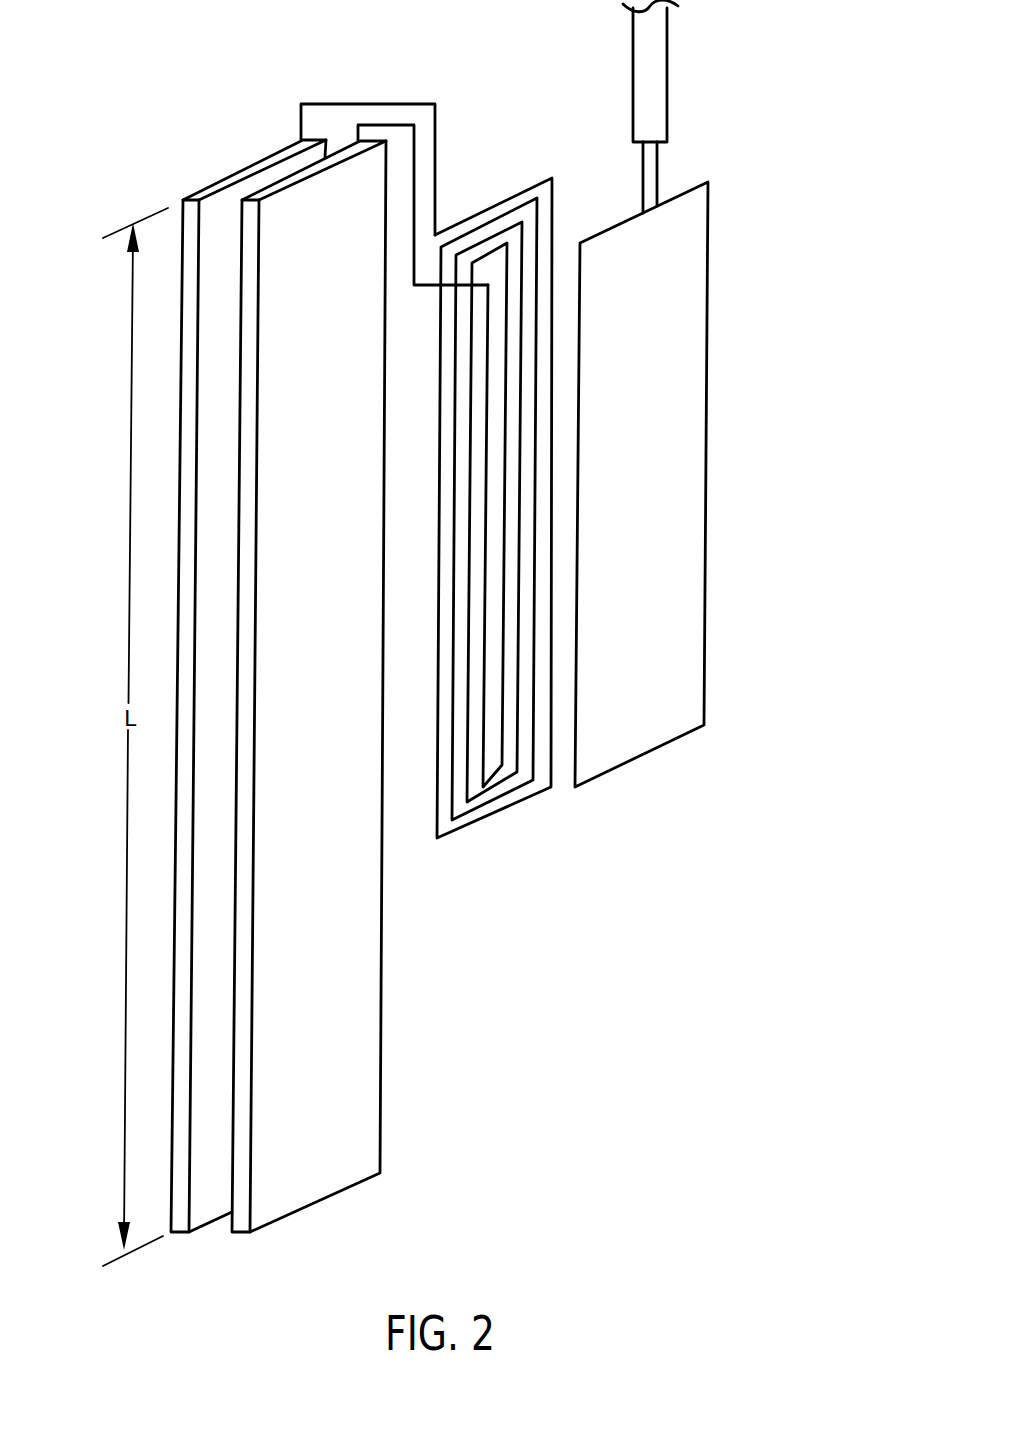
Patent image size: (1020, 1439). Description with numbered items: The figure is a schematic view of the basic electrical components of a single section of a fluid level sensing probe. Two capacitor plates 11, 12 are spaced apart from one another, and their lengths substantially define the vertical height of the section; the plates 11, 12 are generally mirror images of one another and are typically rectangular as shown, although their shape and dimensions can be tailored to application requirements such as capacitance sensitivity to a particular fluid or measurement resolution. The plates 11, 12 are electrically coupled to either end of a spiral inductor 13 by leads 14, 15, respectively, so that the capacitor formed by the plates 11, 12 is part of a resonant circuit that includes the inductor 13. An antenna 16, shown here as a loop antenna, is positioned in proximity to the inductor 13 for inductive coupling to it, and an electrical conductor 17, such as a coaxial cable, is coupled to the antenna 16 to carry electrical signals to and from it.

The capacitor plate 11 is at (197, 1210).
The capacitor plate 12 is at (335, 1175).
The spiral inductor 13 is at (488, 815).
The lead 14 is at (435, 147).
The lead 15 is at (414, 220).
The antenna 16 is at (708, 318).
The electrical conductor 17 is at (653, 77).